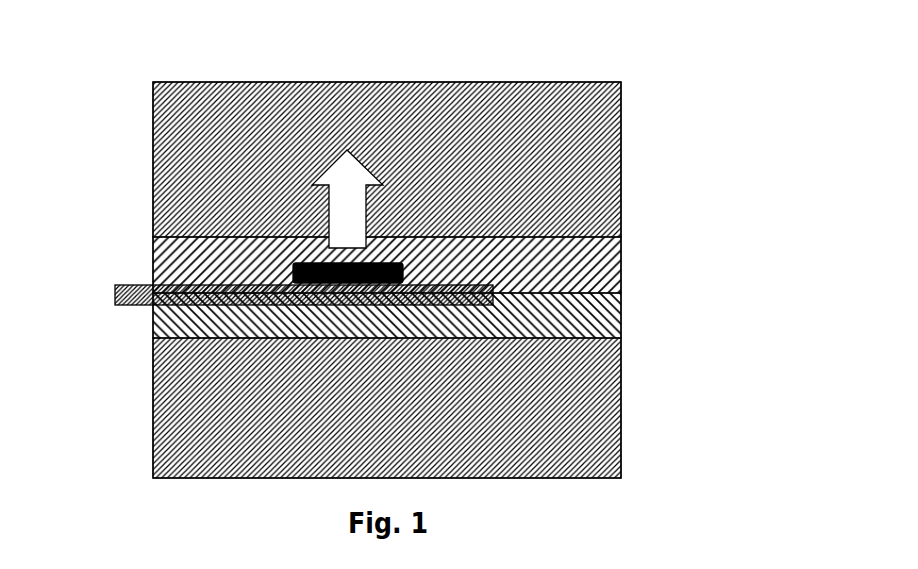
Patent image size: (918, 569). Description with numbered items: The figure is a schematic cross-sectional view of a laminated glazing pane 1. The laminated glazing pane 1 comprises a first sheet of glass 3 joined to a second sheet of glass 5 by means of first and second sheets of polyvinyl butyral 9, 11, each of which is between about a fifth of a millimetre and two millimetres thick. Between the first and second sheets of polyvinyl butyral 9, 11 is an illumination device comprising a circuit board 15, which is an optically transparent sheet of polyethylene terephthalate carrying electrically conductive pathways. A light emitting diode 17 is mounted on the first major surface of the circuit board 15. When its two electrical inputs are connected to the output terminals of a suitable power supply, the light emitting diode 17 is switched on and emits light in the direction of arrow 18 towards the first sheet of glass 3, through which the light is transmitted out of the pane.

The laminated glazing pane 1 is at (665, 81).
The first sheet of glass 3 is at (170, 122).
The second sheet of glass 5 is at (190, 421).
The first sheet of polyvinyl butyral 9 is at (590, 258).
The second sheet of polyvinyl butyral 11 is at (610, 320).
The circuit board 15 is at (138, 303).
The light emitting diode 17 is at (290, 268).
The arrow 18 is at (347, 199).